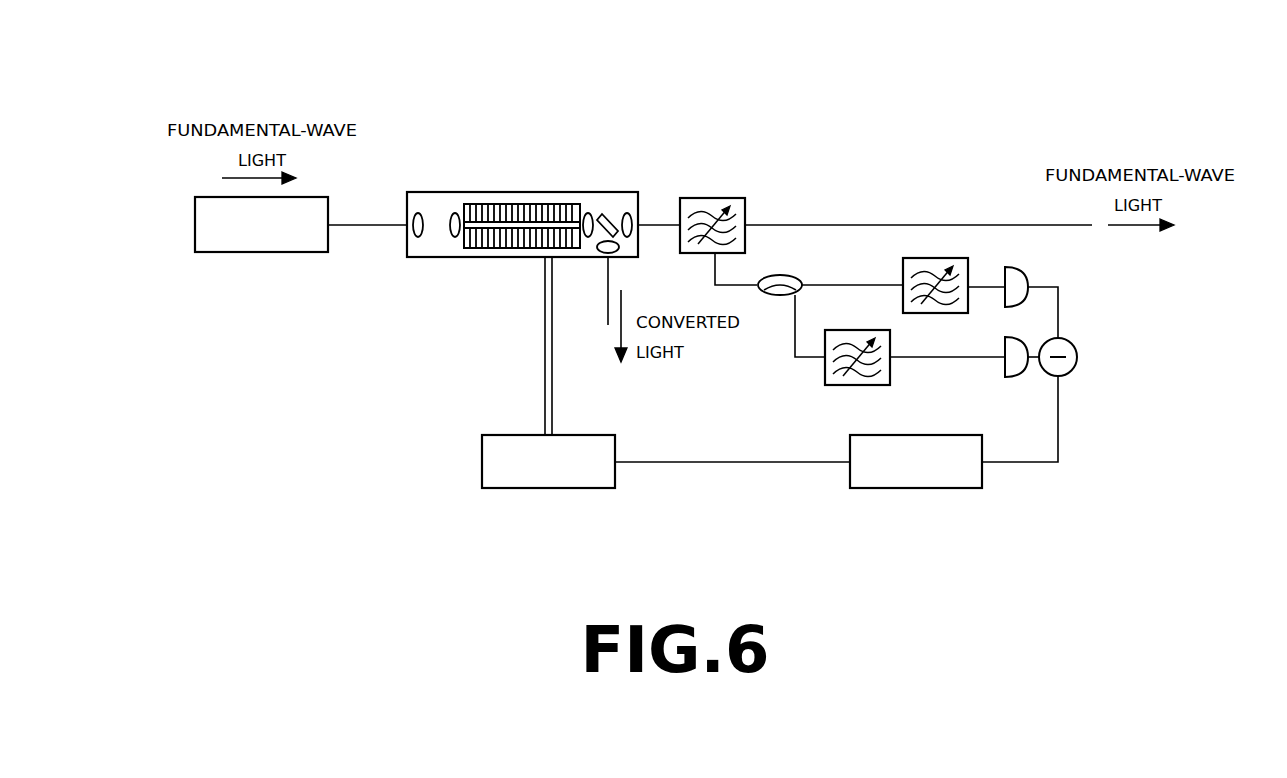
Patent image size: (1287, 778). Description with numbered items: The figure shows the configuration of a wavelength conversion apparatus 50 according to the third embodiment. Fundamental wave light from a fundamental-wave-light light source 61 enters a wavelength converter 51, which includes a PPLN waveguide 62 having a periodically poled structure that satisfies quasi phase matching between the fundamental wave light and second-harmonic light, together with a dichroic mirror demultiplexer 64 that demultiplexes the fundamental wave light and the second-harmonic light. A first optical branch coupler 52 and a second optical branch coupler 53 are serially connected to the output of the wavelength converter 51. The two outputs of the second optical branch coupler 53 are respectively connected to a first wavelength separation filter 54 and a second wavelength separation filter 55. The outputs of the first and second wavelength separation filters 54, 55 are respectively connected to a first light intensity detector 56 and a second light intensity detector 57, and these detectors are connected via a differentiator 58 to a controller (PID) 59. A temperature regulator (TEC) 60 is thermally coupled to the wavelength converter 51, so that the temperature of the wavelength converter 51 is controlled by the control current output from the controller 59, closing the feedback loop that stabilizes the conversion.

The wavelength conversion apparatus 50 is at (757, 106).
The wavelength converter 51 is at (488, 191).
The first optical branch coupler 52 is at (714, 197).
The second optical branch coupler 53 is at (798, 276).
The first wavelength separation filter 54 is at (903, 266).
The second wavelength separation filter 55 is at (825, 372).
The first light intensity detector 56 is at (1020, 270).
The second light intensity detector 57 is at (1013, 379).
The differentiator 58 is at (1078, 357).
The controller (PID) 59 is at (950, 434).
The temperature regulator (TEC) 60 is at (592, 434).
The fundamental-wave-light light source 61 is at (262, 253).
The PPLN waveguide 62 is at (545, 214).
The dichroic mirror demultiplexer 64 is at (610, 214).